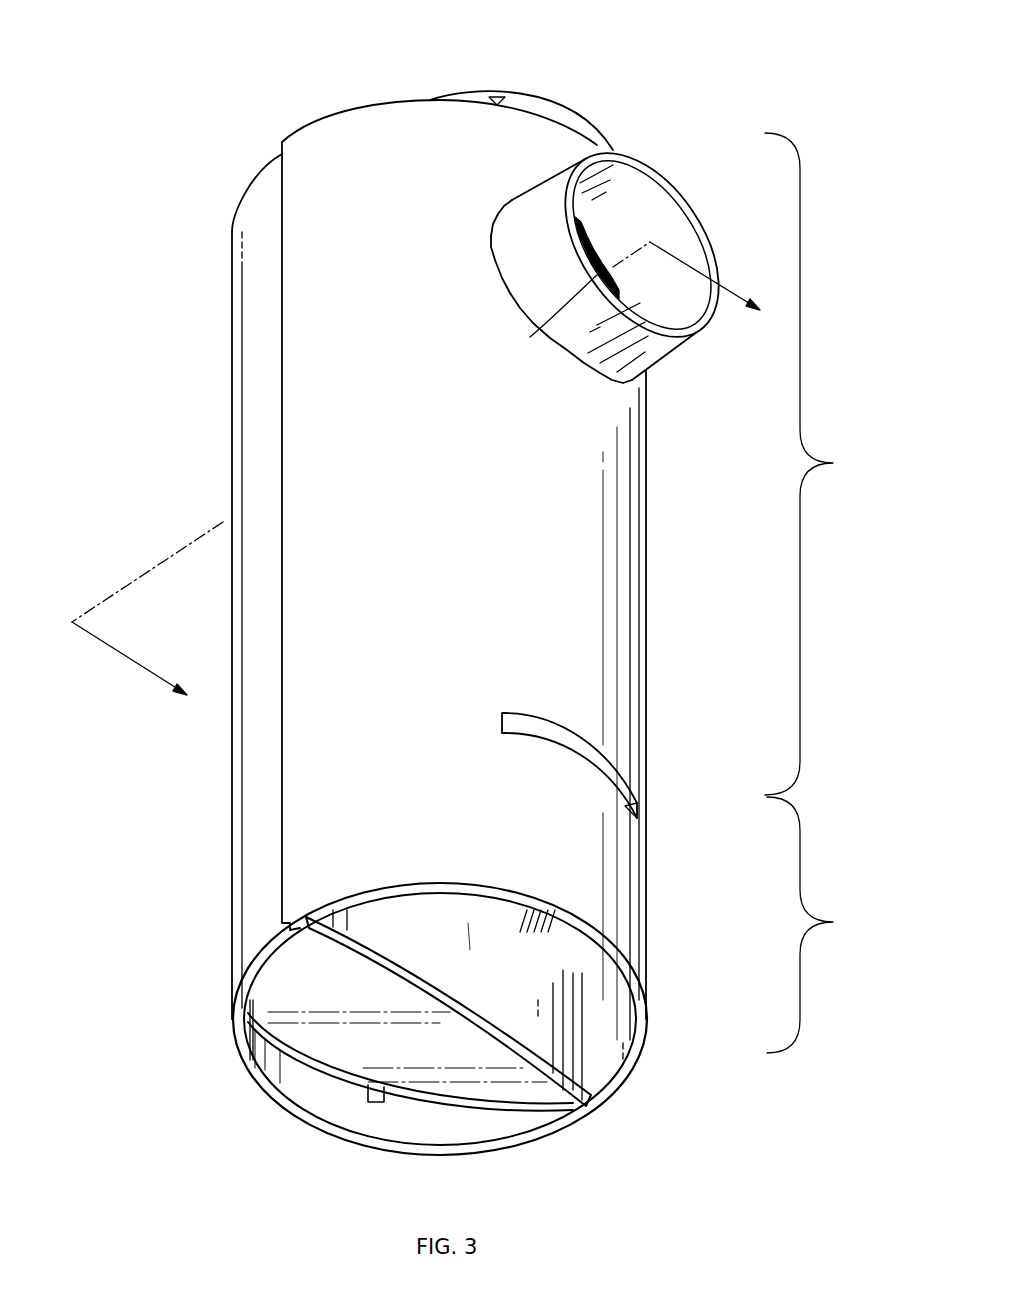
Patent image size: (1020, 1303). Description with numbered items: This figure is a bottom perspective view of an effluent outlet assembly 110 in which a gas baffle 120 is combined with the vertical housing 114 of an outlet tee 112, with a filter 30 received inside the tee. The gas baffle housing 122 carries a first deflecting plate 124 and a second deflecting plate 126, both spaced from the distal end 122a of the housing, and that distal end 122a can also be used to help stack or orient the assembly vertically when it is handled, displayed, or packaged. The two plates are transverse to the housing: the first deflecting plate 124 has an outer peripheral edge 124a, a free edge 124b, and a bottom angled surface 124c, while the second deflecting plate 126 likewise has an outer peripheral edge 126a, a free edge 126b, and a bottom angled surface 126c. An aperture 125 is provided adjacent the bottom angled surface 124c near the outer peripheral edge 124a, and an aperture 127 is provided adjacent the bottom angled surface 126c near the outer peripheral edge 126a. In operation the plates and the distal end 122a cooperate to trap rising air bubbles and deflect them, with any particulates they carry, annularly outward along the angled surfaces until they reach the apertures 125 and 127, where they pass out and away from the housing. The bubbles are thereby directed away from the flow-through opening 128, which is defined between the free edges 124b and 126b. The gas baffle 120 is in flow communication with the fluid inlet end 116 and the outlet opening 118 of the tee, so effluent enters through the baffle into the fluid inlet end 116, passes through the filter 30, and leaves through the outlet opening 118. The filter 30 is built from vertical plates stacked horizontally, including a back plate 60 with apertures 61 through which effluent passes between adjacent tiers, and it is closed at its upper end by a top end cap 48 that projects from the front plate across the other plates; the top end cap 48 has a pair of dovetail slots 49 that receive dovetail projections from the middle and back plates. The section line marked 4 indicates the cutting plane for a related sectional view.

The effluent outlet assembly 110 is at (145, 143).
The filter 30 is at (458, 71).
The top end cap 48 is at (560, 112).
The dovetail slots 49 is at (499, 98).
The back plate 60 is at (603, 241).
The apertures 61 is at (530, 337).
The outlet opening 118 is at (655, 213).
The section line 4 is at (425, 479).
The outlet tee 112 is at (820, 464).
The gas baffle 120 is at (821, 925).
The vertical housing 114 is at (298, 578).
The aperture 125 is at (526, 712).
The gas baffle housing 122 is at (300, 885).
The distal end 122a is at (318, 1112).
The fluid inlet end 116 is at (434, 937).
The second deflecting plate 126 is at (544, 1111).
The outer peripheral edge 126a is at (380, 1080).
The free edge 126b is at (378, 945).
The bottom angled surface 126c is at (480, 1092).
The aperture 127 is at (358, 1104).
The first deflecting plate 124 is at (560, 1026).
The outer peripheral edge 124a is at (596, 975).
The free edge 124b is at (468, 923).
The bottom angled surface 124c is at (518, 915).
The flow-through opening 128 is at (580, 1017).